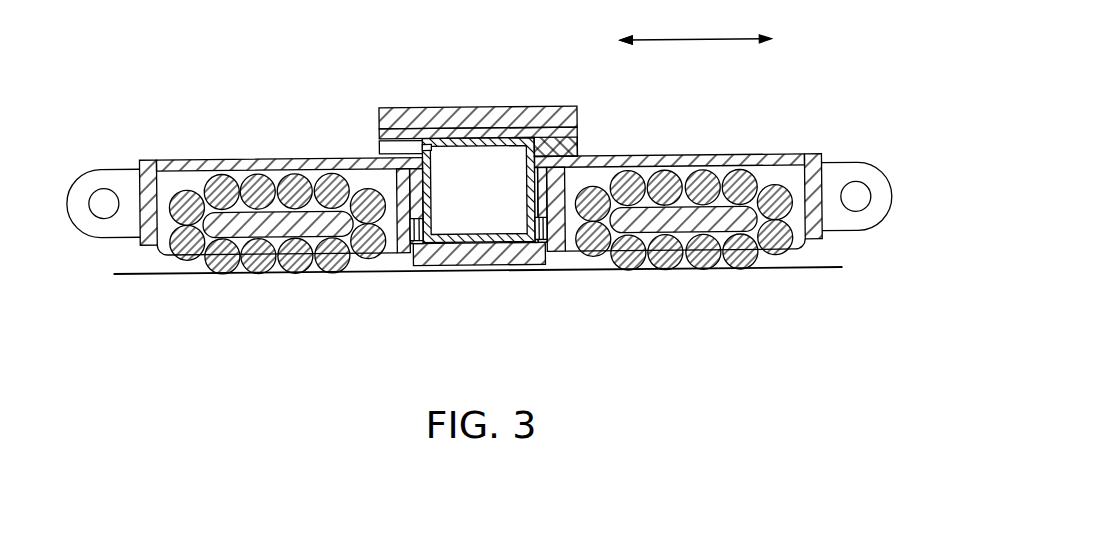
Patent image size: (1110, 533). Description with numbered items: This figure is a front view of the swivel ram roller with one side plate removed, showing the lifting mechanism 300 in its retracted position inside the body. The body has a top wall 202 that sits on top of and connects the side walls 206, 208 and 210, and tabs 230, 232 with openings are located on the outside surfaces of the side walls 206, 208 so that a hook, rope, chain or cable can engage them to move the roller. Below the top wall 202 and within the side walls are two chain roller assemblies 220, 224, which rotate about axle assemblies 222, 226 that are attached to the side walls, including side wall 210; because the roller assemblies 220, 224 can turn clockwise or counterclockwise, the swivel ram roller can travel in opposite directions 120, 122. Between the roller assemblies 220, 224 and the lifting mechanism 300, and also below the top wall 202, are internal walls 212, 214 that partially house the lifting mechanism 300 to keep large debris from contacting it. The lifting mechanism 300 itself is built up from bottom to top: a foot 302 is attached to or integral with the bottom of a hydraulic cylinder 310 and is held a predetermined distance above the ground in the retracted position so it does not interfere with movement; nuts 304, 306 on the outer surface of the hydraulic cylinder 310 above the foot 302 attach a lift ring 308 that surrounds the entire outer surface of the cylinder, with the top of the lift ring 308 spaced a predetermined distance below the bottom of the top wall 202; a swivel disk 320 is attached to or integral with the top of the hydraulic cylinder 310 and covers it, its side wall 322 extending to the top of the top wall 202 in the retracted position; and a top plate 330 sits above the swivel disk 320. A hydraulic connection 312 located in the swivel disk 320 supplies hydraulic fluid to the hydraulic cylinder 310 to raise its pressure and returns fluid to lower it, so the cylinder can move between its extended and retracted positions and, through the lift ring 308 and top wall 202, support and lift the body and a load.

The direction 120 is at (705, 27).
The direction 122 is at (617, 28).
The top wall 202 is at (738, 164).
The side wall 206 is at (813, 165).
The side wall 208 is at (149, 162).
The side wall 210 is at (797, 245).
The internal wall 212 is at (557, 188).
The internal wall 214 is at (402, 254).
The roller assembly 220 is at (745, 289).
The axle assembly 222 is at (683, 219).
The roller assembly 224 is at (306, 288).
The axle assembly 226 is at (276, 224).
The tab 230 is at (870, 172).
The tab 232 is at (84, 184).
The lifting mechanism 300 is at (486, 209).
The foot 302 is at (478, 256).
The nut 304 is at (544, 244).
The nut 306 is at (549, 216).
The lift ring 308 is at (552, 196).
The hydraulic cylinder 310 is at (466, 200).
The hydraulic connection 312 is at (381, 146).
The swivel disk 320 is at (515, 112).
The side wall 322 is at (568, 144).
The top plate 330 is at (518, 118).